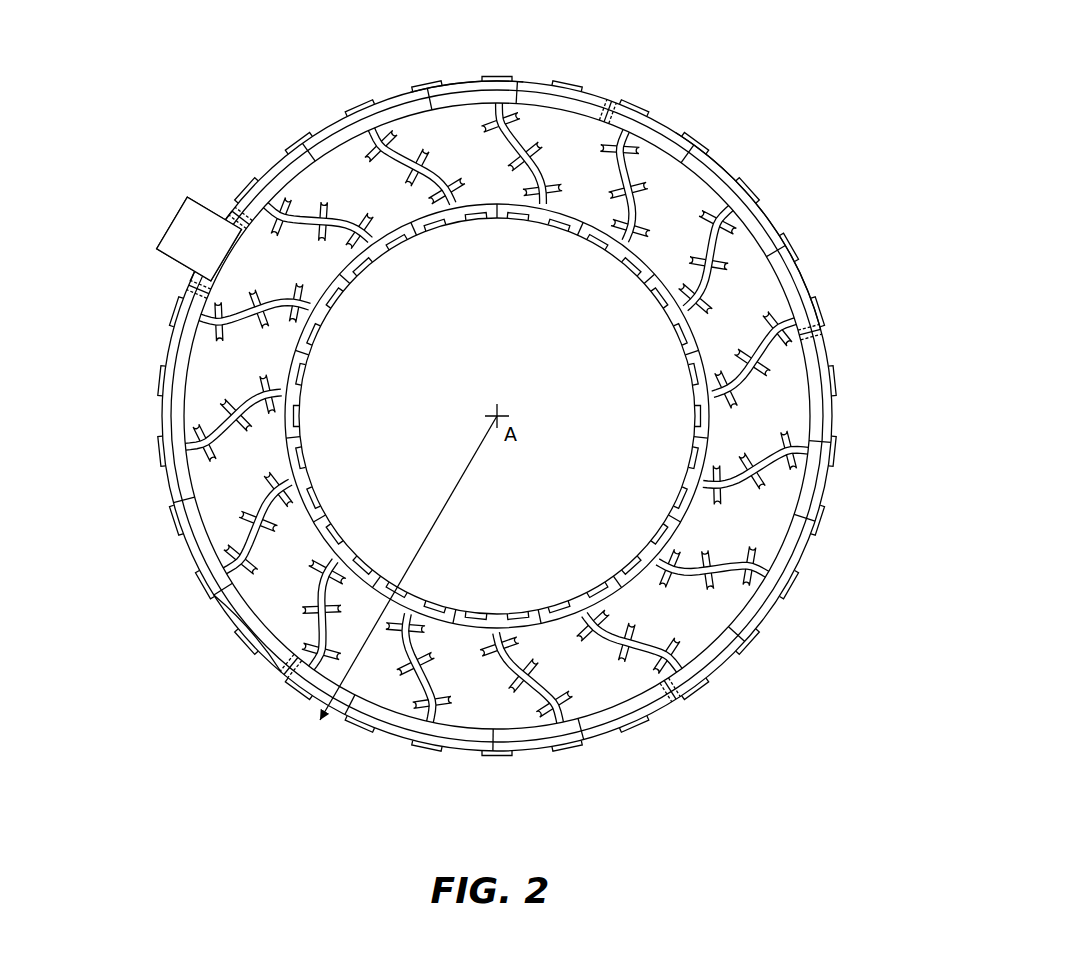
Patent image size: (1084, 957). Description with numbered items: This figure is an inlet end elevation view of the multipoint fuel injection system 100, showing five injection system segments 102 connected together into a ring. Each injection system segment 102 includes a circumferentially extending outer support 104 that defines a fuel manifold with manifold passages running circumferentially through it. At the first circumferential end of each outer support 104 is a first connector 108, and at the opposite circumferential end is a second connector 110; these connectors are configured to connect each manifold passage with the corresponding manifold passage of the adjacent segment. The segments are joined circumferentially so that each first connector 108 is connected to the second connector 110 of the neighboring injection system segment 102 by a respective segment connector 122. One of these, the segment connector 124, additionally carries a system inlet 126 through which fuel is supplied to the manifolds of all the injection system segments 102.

The multipoint fuel injection system 100 is at (290, 80).
The injection system segment 102 is at (397, 98).
The outer support 104 is at (500, 76).
The first connector 108 is at (608, 100).
The second connector 110 is at (235, 206).
The segment connector 122 is at (594, 48).
The segment connector 124 is at (166, 219).
The system inlet 126 is at (199, 239).